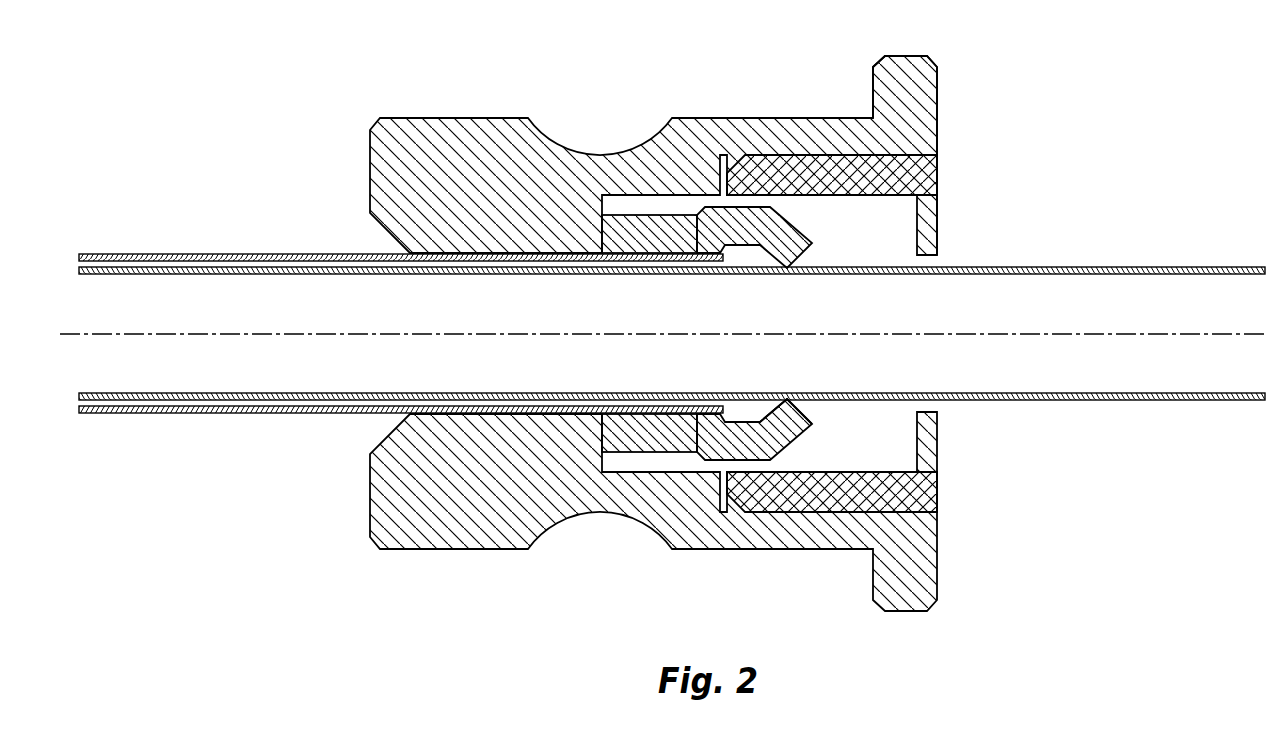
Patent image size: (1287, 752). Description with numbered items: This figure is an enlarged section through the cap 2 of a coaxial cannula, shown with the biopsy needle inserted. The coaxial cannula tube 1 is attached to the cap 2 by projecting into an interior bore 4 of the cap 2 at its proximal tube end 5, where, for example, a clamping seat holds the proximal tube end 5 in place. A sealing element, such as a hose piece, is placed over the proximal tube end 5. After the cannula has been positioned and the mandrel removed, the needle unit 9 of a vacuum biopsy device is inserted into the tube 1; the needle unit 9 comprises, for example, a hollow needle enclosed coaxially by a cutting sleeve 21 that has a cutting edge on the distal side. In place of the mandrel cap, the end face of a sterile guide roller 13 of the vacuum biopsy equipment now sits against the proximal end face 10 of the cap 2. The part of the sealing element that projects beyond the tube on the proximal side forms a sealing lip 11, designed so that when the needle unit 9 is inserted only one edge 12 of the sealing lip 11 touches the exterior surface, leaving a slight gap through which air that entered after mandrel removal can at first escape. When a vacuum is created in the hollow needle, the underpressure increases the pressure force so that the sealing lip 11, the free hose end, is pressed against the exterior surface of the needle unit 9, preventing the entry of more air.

The coaxial cannula tube 1 is at (338, 254).
The cap 2 is at (517, 153).
The interior bore 4 is at (513, 413).
The proximal tube end 5 is at (697, 247).
The needle unit 9 is at (987, 303).
The proximal end face 10 is at (937, 115).
The sealing lip 11 is at (778, 440).
The edge of the sealing lip 12 is at (785, 402).
The guide roller 13 is at (810, 162).
The cutting sleeve 21 is at (1075, 267).